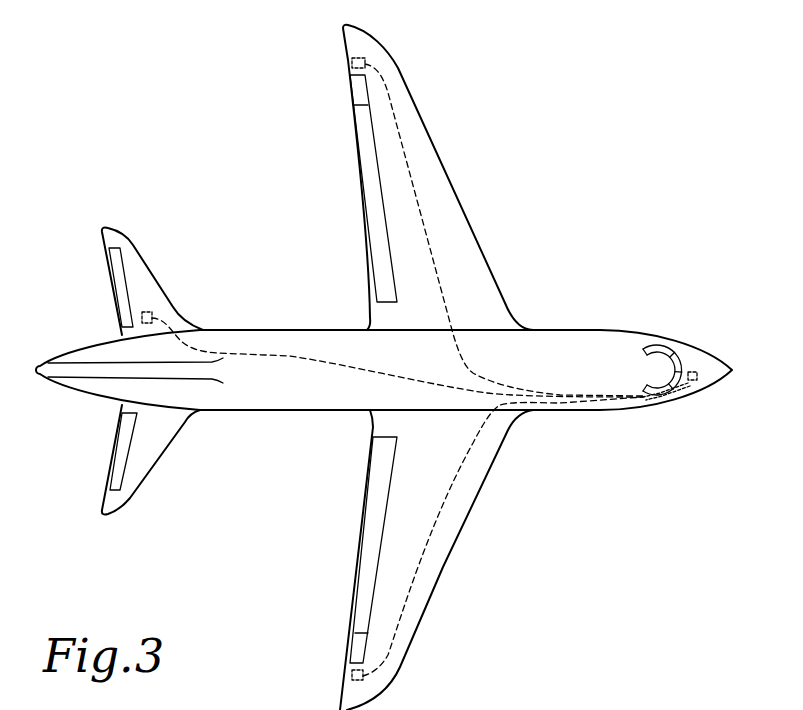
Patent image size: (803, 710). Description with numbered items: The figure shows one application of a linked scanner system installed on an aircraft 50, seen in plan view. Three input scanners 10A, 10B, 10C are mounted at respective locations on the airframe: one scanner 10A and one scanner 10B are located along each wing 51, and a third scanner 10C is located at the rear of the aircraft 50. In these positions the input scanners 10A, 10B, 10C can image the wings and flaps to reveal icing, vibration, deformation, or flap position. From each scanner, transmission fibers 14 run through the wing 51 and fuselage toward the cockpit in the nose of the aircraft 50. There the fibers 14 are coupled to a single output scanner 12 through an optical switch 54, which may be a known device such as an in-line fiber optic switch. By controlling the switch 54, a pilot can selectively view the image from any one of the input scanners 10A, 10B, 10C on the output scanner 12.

The input scanner 10A is at (357, 682).
The input scanner 10B is at (352, 61).
The input scanner 10C is at (153, 311).
The output scanner 12 is at (698, 376).
The transmission fibers 14 is at (412, 183).
The aircraft 50 is at (588, 147).
The wing 51 is at (400, 67).
The optical switch 54 is at (688, 388).